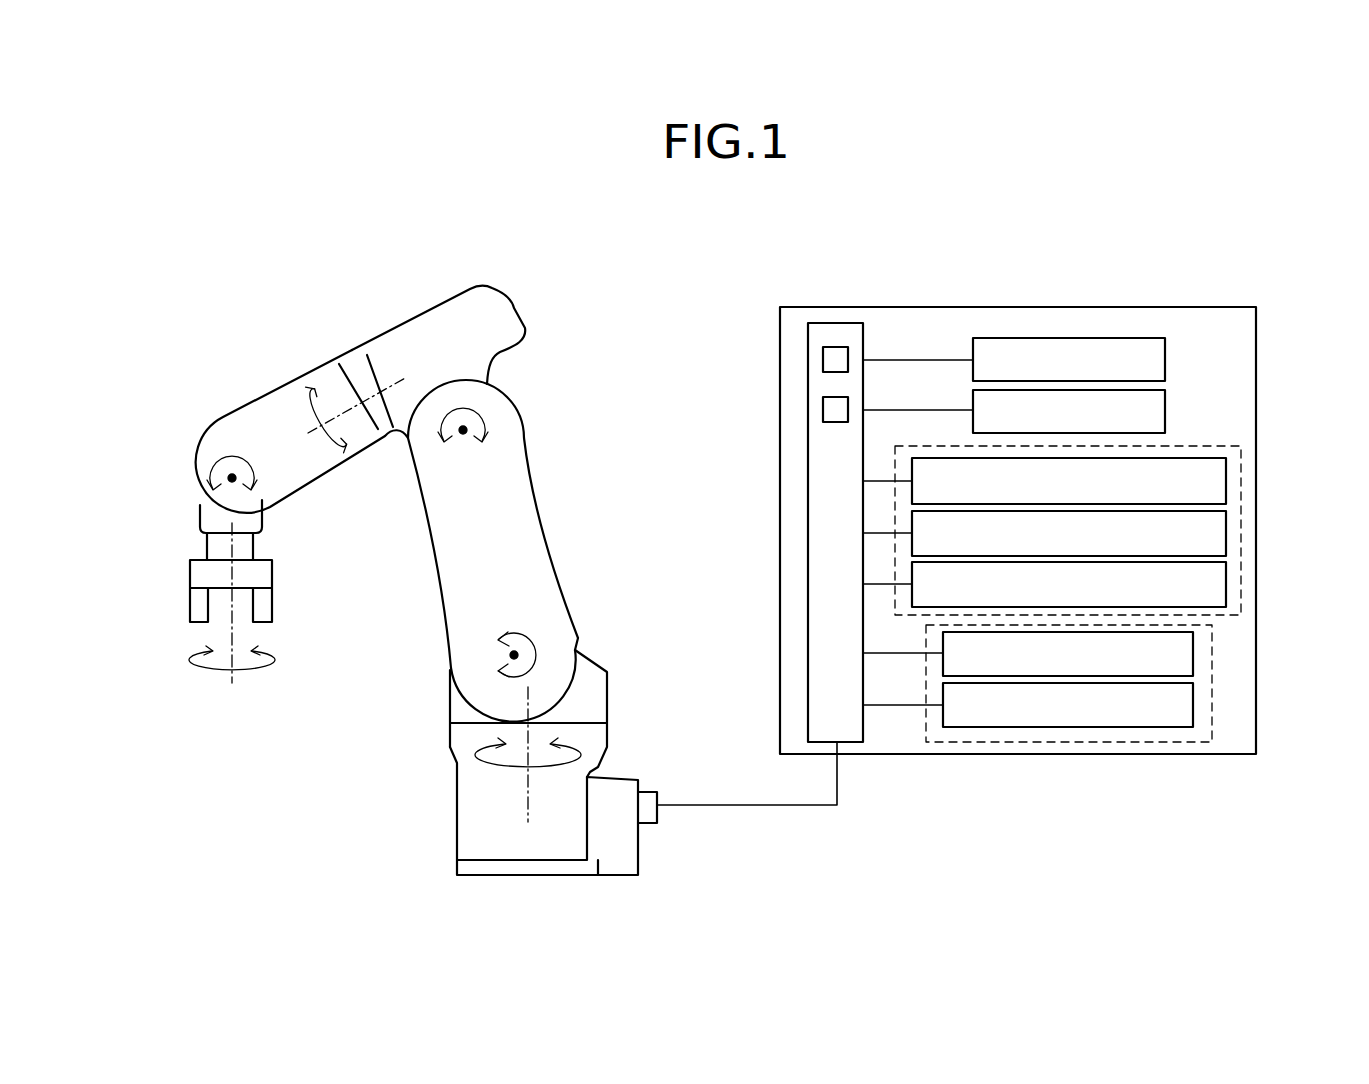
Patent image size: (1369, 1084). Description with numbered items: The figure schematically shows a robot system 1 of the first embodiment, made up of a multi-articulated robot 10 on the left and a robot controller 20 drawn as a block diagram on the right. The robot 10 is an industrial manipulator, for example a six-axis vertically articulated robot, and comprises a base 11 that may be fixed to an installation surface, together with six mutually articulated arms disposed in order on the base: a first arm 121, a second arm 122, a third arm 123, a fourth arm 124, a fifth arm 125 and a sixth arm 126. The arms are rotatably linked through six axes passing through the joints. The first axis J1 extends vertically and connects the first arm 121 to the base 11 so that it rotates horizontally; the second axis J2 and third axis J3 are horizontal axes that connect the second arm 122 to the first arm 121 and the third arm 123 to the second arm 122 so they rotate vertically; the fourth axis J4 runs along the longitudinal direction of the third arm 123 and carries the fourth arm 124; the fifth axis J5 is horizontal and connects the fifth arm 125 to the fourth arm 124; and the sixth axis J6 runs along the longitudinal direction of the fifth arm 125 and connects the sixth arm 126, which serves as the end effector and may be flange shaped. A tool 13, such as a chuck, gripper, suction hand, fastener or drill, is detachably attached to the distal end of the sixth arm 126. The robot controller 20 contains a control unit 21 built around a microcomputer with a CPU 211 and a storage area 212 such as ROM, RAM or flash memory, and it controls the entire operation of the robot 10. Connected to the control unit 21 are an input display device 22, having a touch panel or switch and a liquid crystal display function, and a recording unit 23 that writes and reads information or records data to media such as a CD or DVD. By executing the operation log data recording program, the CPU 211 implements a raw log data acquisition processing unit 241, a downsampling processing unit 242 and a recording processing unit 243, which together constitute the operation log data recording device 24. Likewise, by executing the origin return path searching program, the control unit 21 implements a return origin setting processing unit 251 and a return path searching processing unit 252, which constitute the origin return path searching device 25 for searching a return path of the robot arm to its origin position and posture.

The robot system 1 is at (720, 262).
The robot 10 is at (465, 288).
The base 11 is at (457, 841).
The tool 13 is at (272, 577).
The robot controller 20 is at (997, 292).
The control unit 21 is at (838, 323).
The input display device 22 is at (1165, 362).
The recording unit 23 is at (1165, 412).
The operation log data recording device 24 is at (1242, 458).
The origin return path searching device 25 is at (1119, 743).
The first arm 121 is at (610, 690).
The second arm 122 is at (532, 527).
The third arm 123 is at (522, 313).
The fourth arm 124 is at (233, 417).
The fifth arm 125 is at (263, 515).
The sixth arm 126 is at (207, 547).
The CPU 211 is at (823, 360).
The storage area 212 is at (823, 410).
The raw log data acquisition processing unit 241 is at (1226, 481).
The downsampling processing unit 242 is at (1226, 533).
The recording processing unit 243 is at (1226, 584).
The return origin setting processing unit 251 is at (1193, 653).
The return path searching processing unit 252 is at (1193, 705).
The first axis J1 is at (528, 787).
The second axis J2 is at (514, 655).
The third axis J3 is at (463, 430).
The fourth axis J4 is at (390, 387).
The fifth axis J5 is at (225, 488).
The sixth axis J6 is at (232, 632).